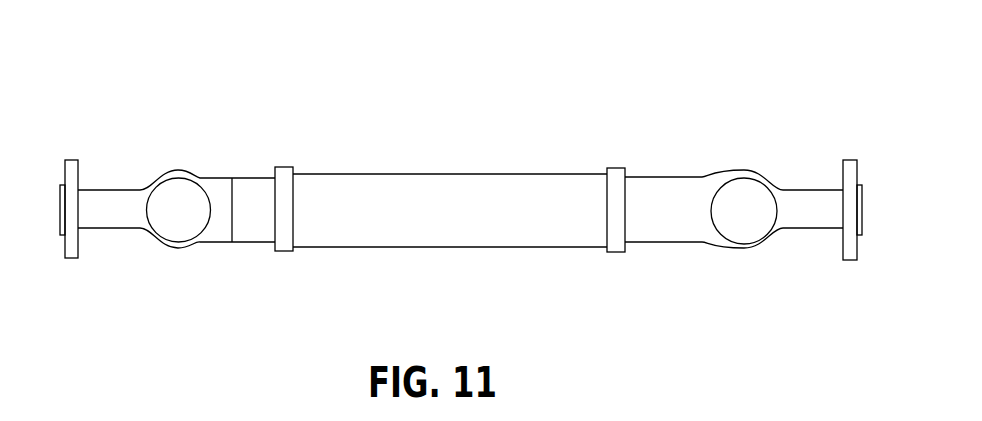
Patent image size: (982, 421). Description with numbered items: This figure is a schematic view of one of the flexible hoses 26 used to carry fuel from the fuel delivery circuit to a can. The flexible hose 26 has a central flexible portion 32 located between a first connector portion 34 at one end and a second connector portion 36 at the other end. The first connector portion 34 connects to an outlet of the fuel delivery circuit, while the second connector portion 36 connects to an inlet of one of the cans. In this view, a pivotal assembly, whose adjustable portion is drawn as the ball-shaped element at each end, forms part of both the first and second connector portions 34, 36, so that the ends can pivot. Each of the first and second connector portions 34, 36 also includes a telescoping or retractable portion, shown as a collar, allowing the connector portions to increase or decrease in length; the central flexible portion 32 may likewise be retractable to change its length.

The flexible hose 26 is at (552, 127).
The central flexible portion 32 is at (487, 221).
The first connector portion 34 is at (122, 160).
The second connector portion 36 is at (807, 163).